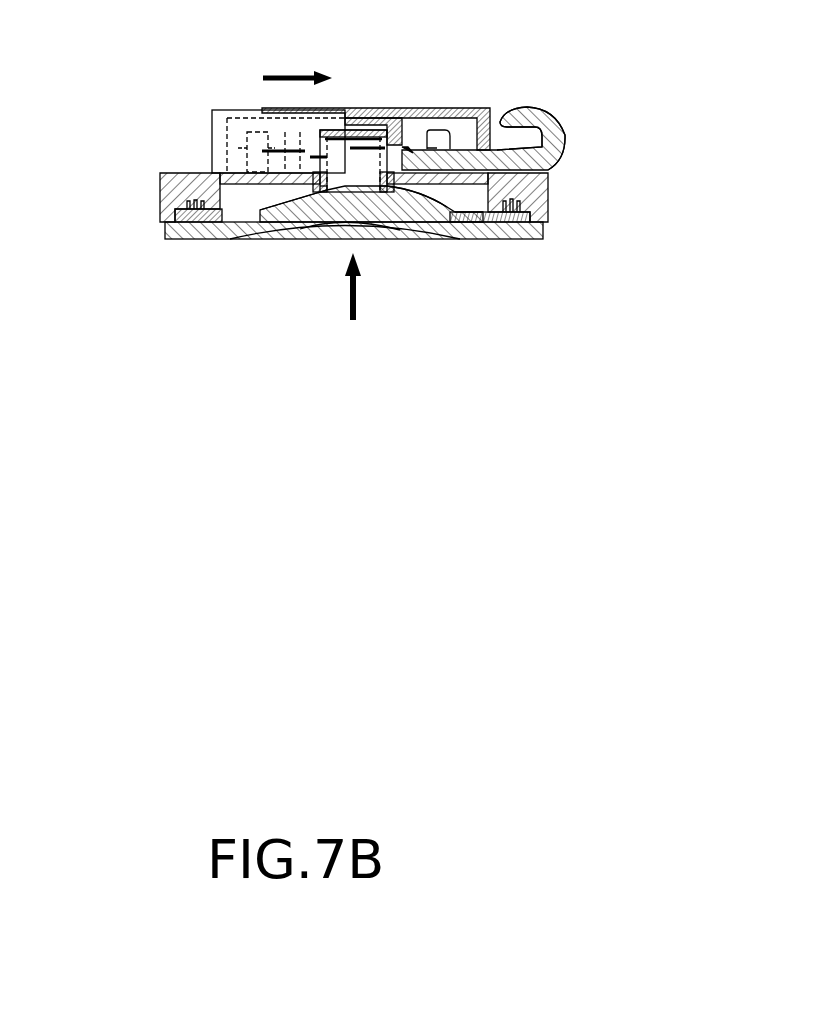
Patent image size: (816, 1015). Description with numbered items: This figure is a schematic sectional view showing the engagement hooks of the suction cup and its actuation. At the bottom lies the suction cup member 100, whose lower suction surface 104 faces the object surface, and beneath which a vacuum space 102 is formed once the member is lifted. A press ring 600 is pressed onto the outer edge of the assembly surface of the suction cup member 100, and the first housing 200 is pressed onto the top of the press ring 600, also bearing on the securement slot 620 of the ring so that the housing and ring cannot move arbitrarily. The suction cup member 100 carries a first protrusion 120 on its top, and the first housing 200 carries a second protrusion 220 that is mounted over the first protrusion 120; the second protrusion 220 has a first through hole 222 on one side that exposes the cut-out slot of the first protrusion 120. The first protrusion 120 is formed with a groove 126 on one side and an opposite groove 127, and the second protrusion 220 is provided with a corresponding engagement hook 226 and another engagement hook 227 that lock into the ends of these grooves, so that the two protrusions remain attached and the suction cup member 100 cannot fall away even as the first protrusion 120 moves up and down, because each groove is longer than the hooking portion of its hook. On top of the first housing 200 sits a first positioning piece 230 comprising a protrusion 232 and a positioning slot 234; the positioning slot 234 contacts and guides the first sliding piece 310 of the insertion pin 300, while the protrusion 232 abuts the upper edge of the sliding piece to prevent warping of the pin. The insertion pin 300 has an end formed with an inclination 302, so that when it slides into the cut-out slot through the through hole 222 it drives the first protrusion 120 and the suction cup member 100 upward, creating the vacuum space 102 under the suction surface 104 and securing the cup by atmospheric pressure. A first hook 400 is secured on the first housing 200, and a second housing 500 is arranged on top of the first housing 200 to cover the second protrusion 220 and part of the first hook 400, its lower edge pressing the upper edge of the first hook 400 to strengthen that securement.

The suction cup member 100 is at (508, 240).
The vacuum space 102 is at (357, 232).
The suction surface 104 is at (470, 242).
The first protrusion 120 is at (343, 190).
The groove 126 is at (325, 191).
The groove 127 is at (385, 196).
The first housing 200 is at (552, 203).
The second protrusion 220 is at (352, 114).
The first through hole 222 is at (285, 150).
The engagement hook 226 is at (260, 210).
The engagement hook 227 is at (420, 203).
The first positioning piece 230 is at (222, 112).
The protrusion 232 is at (250, 131).
The positioning slot 234 is at (253, 162).
The insertion pin 300 is at (217, 135).
The inclination 302 is at (421, 148).
The first sliding piece 310 is at (440, 111).
The first hook 400 is at (548, 106).
The second housing 500 is at (408, 147).
The press ring 600 is at (531, 221).
The securement slot 620 is at (222, 207).